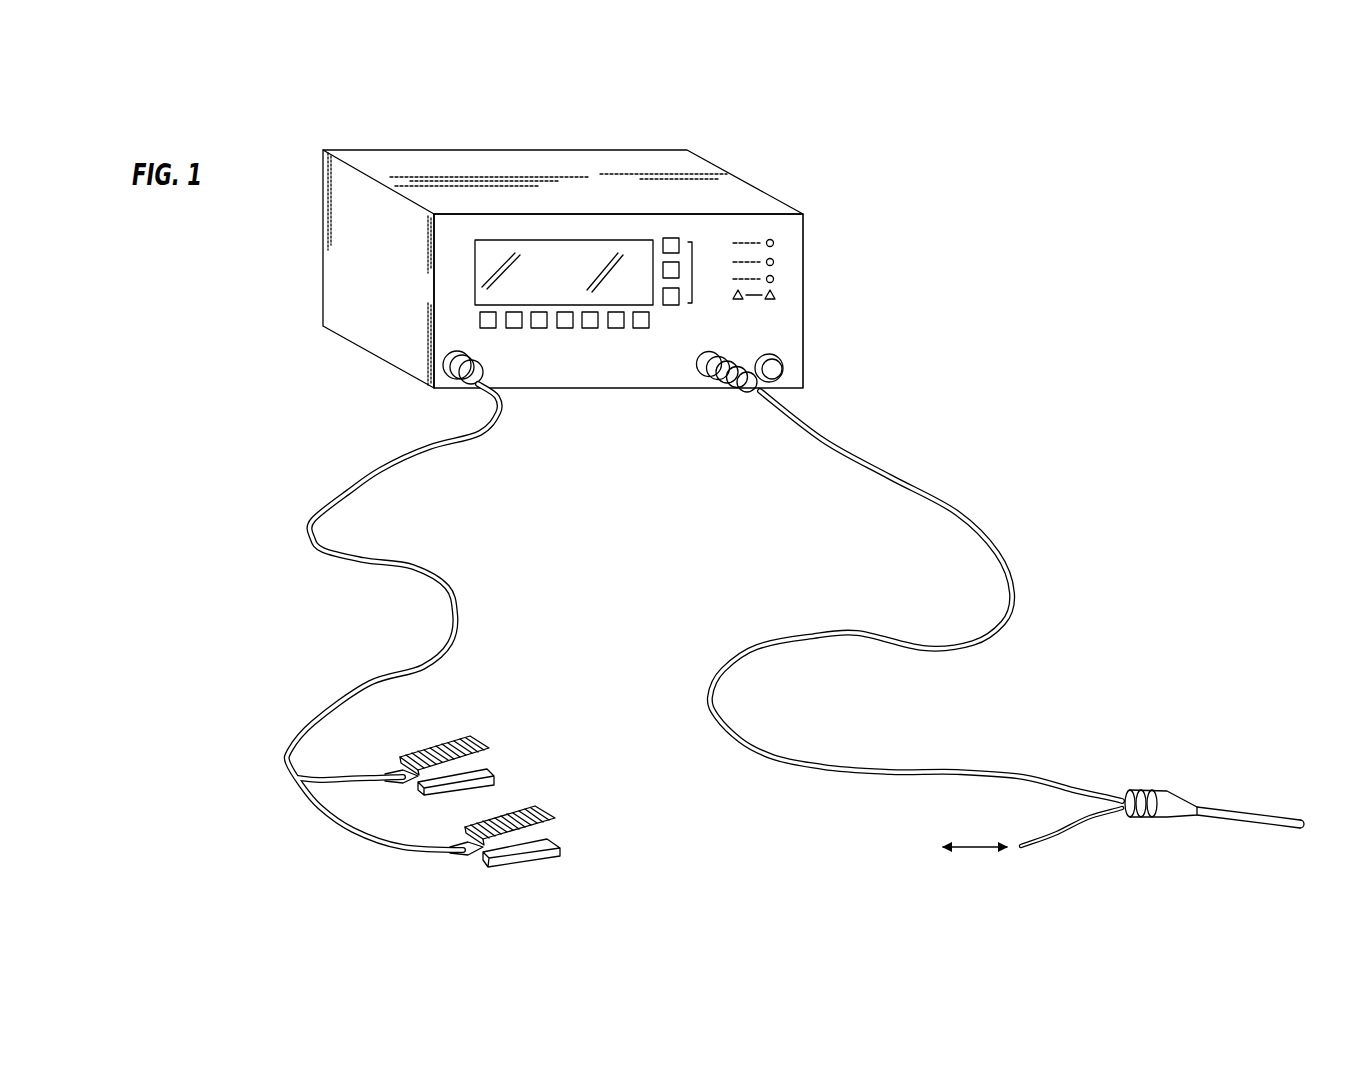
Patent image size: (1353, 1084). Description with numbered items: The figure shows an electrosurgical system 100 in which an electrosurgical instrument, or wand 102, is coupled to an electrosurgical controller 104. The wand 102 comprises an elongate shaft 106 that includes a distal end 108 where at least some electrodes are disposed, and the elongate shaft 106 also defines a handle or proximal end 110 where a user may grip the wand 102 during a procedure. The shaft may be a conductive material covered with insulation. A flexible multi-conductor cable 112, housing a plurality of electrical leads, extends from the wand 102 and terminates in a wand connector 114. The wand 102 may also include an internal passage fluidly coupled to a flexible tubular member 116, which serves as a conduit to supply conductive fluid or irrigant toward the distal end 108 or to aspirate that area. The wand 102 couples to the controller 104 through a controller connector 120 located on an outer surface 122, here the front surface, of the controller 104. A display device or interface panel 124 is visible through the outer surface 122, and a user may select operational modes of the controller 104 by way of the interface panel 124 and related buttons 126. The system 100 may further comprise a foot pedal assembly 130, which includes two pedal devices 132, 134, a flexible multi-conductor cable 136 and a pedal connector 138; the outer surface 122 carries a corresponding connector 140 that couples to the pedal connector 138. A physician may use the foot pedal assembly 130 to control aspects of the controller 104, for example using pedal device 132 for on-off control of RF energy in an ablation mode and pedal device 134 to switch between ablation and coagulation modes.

The electrosurgical system 100 is at (923, 192).
The electrosurgical instrument 102 is at (1165, 766).
The electrosurgical controller 104 is at (642, 162).
The elongate shaft 106 is at (1210, 821).
The distal end 108 is at (1302, 838).
The proximal end 110 is at (1145, 828).
The flexible multi-conductor cable 112 is at (992, 543).
The wand connector 114 is at (751, 398).
The flexible tubular member 116 is at (1035, 850).
The controller connector 120 is at (712, 352).
The outer surface 122 is at (655, 372).
The interface panel 124 is at (576, 285).
The buttons 126 is at (697, 268).
The foot pedal assembly 130 is at (500, 564).
The pedal device 132 is at (450, 738).
The pedal device 134 is at (543, 863).
The flexible multi-conductor cable 136 is at (368, 563).
The pedal connector 138 is at (475, 383).
The connector 140 is at (443, 360).